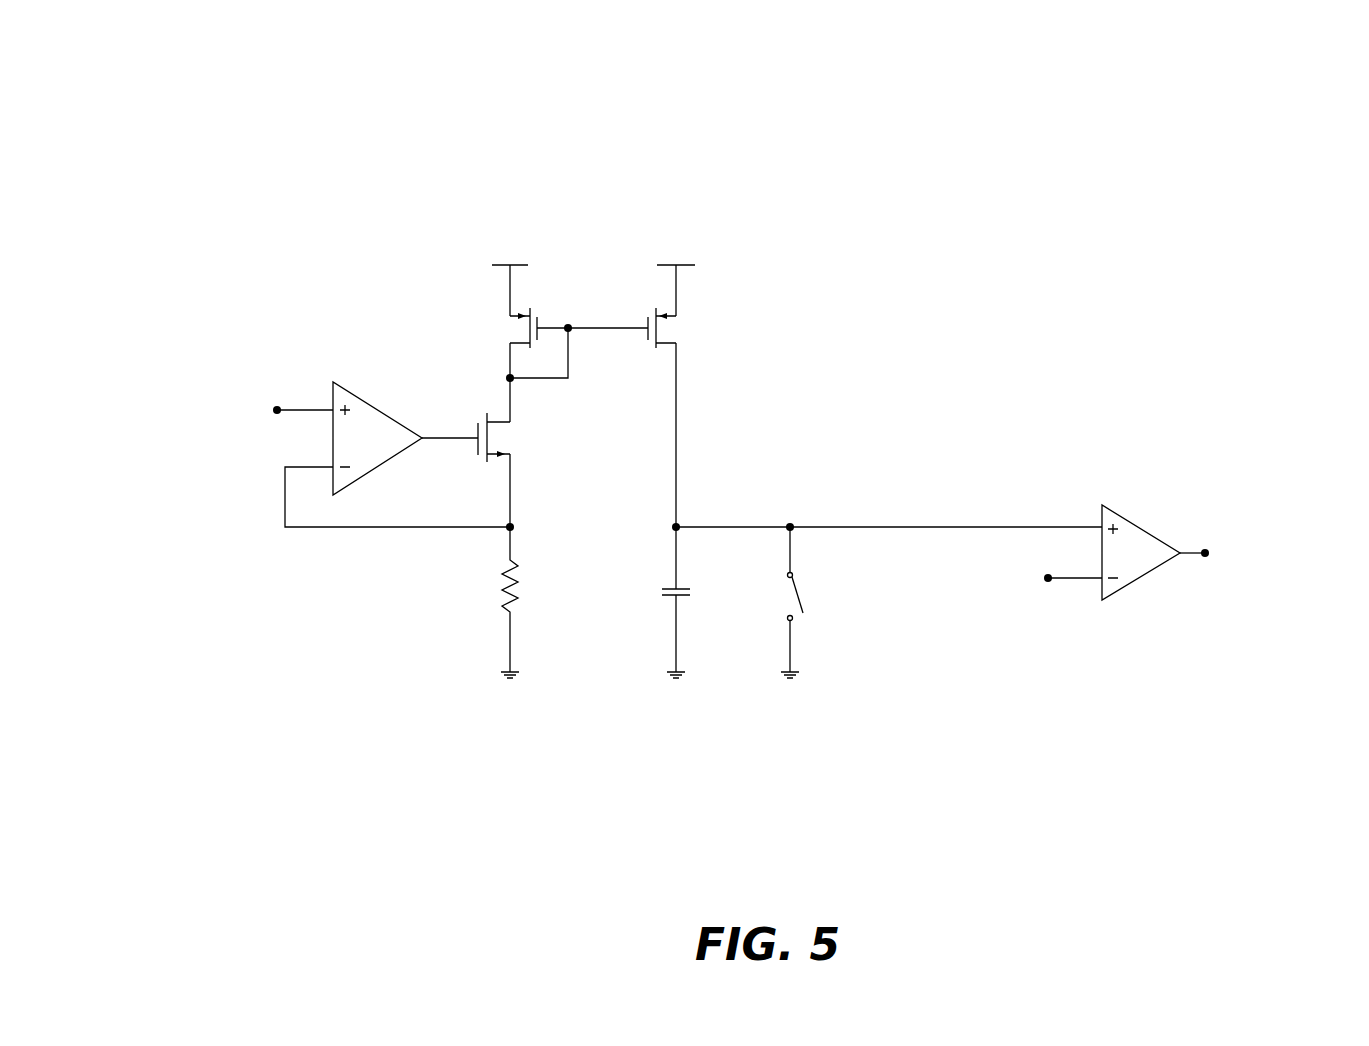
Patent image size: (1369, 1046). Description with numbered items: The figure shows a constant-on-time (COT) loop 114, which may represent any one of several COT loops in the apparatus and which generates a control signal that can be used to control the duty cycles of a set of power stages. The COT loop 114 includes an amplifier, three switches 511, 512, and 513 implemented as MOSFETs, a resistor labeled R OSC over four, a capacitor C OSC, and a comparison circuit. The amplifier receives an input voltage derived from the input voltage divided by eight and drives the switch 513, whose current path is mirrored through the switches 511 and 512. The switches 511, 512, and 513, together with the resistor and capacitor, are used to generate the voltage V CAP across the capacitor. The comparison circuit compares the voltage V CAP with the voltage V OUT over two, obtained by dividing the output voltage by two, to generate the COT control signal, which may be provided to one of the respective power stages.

The constant-on-time loop 114 is at (277, 110).
The switch 511 is at (503, 330).
The switch 512 is at (691, 333).
The switch 513 is at (520, 440).